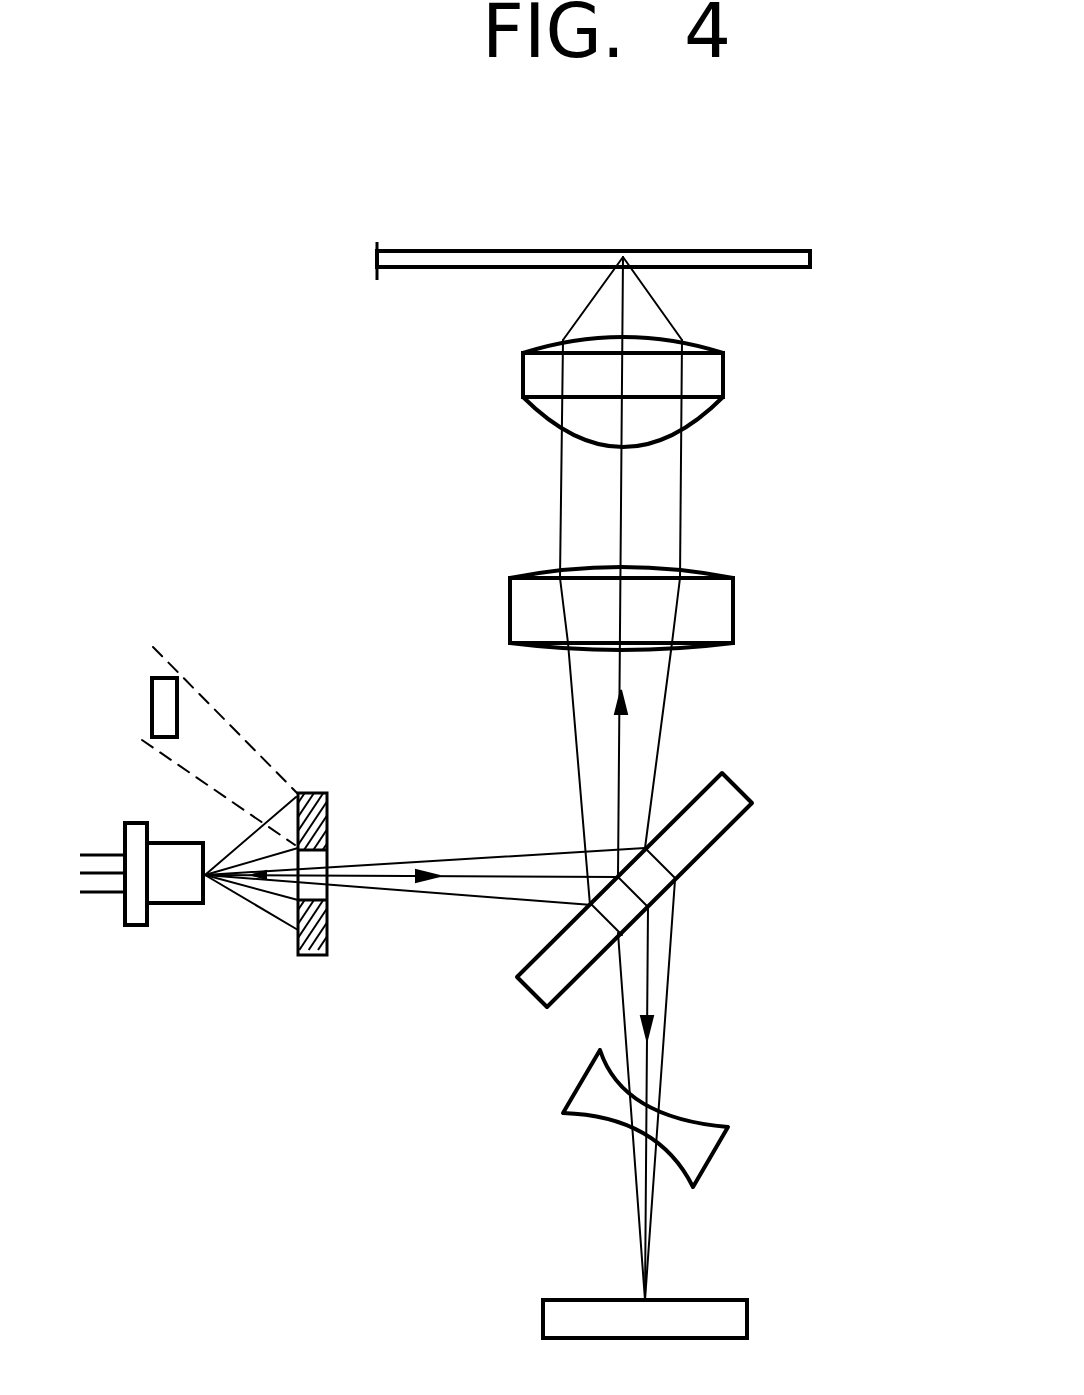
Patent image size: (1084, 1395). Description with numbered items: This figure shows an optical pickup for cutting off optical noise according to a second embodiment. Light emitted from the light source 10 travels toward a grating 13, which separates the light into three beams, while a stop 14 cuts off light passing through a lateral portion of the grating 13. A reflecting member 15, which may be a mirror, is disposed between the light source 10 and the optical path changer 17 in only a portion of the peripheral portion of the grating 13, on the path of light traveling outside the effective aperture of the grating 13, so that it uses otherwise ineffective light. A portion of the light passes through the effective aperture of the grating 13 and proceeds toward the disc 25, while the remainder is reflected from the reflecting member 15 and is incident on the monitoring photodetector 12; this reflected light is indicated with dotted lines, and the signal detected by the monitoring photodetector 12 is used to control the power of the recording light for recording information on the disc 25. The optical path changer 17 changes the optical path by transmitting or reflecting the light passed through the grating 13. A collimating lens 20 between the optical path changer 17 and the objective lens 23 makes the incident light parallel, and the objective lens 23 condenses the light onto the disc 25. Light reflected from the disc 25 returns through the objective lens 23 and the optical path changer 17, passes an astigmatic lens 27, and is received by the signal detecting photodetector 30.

The light source 10 is at (172, 905).
The monitoring photodetector 12 is at (150, 705).
The grating 13 is at (320, 890).
The stop 14 is at (362, 911).
The reflecting member 15 is at (329, 822).
The optical path changer 17 is at (740, 787).
The collimating lens 20 is at (735, 611).
The objective lens 23 is at (725, 376).
The disc 25 is at (812, 259).
The astigmatic lens 27 is at (692, 1132).
The signal detecting photodetector 30 is at (749, 1320).